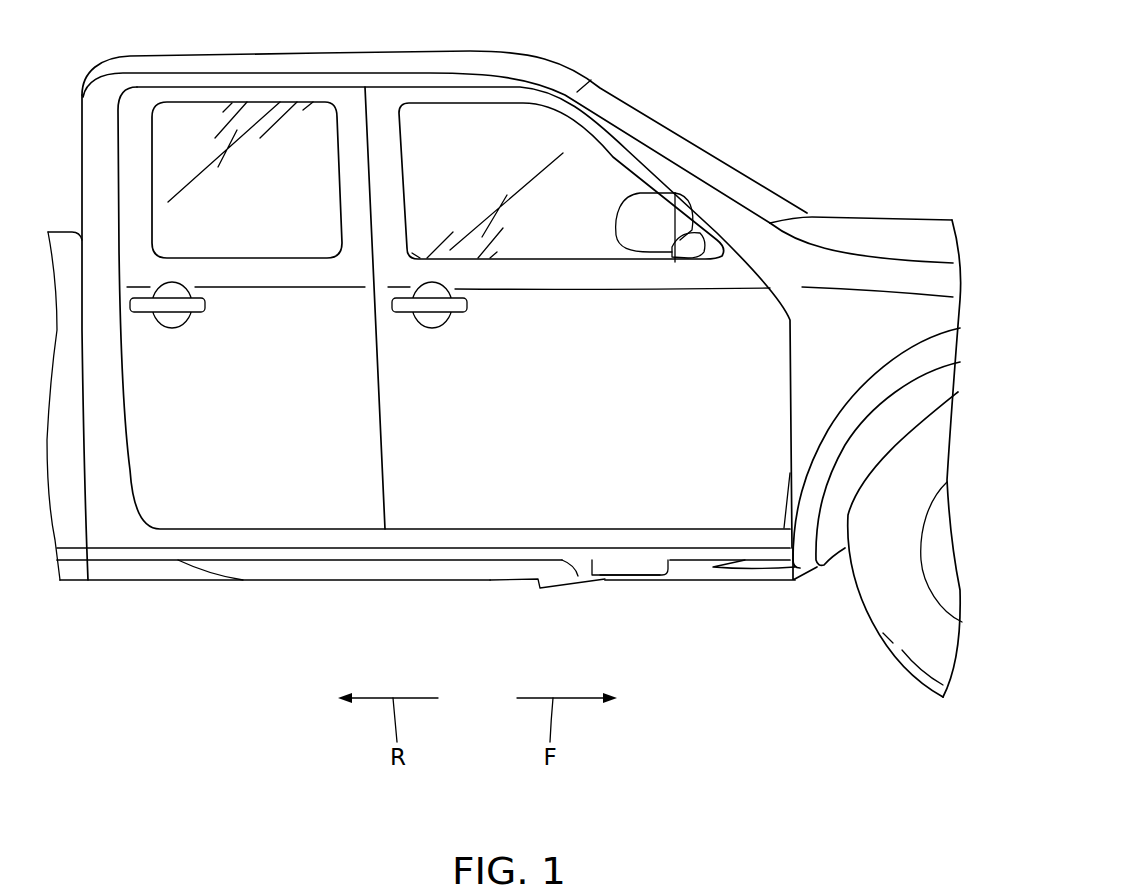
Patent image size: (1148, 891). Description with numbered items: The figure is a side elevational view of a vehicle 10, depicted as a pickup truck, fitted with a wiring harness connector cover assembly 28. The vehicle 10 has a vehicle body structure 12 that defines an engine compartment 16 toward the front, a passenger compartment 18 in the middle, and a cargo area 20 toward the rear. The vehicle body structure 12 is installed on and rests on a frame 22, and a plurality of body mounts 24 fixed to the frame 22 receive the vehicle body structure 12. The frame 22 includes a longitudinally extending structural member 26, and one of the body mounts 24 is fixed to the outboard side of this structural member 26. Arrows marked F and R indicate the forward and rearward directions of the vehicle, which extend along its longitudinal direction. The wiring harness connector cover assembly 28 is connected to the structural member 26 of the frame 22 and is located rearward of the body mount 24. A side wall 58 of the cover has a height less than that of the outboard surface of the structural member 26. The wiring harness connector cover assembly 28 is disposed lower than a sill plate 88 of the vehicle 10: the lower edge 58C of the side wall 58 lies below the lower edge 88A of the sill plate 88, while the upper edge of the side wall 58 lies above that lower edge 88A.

The vehicle 10 is at (777, 115).
The vehicle body structure 12 is at (648, 108).
The engine compartment 16 is at (892, 235).
The passenger compartment 18 is at (487, 142).
The cargo area 20 is at (60, 231).
The frame 22 is at (128, 583).
The body mount 24 is at (763, 570).
The structural member 26 is at (355, 568).
The wiring harness connector cover assembly 28 is at (652, 578).
The side wall 58 is at (620, 568).
The lower edge 58C is at (607, 580).
The sill plate 88 is at (702, 542).
The lower edge 88A is at (442, 562).